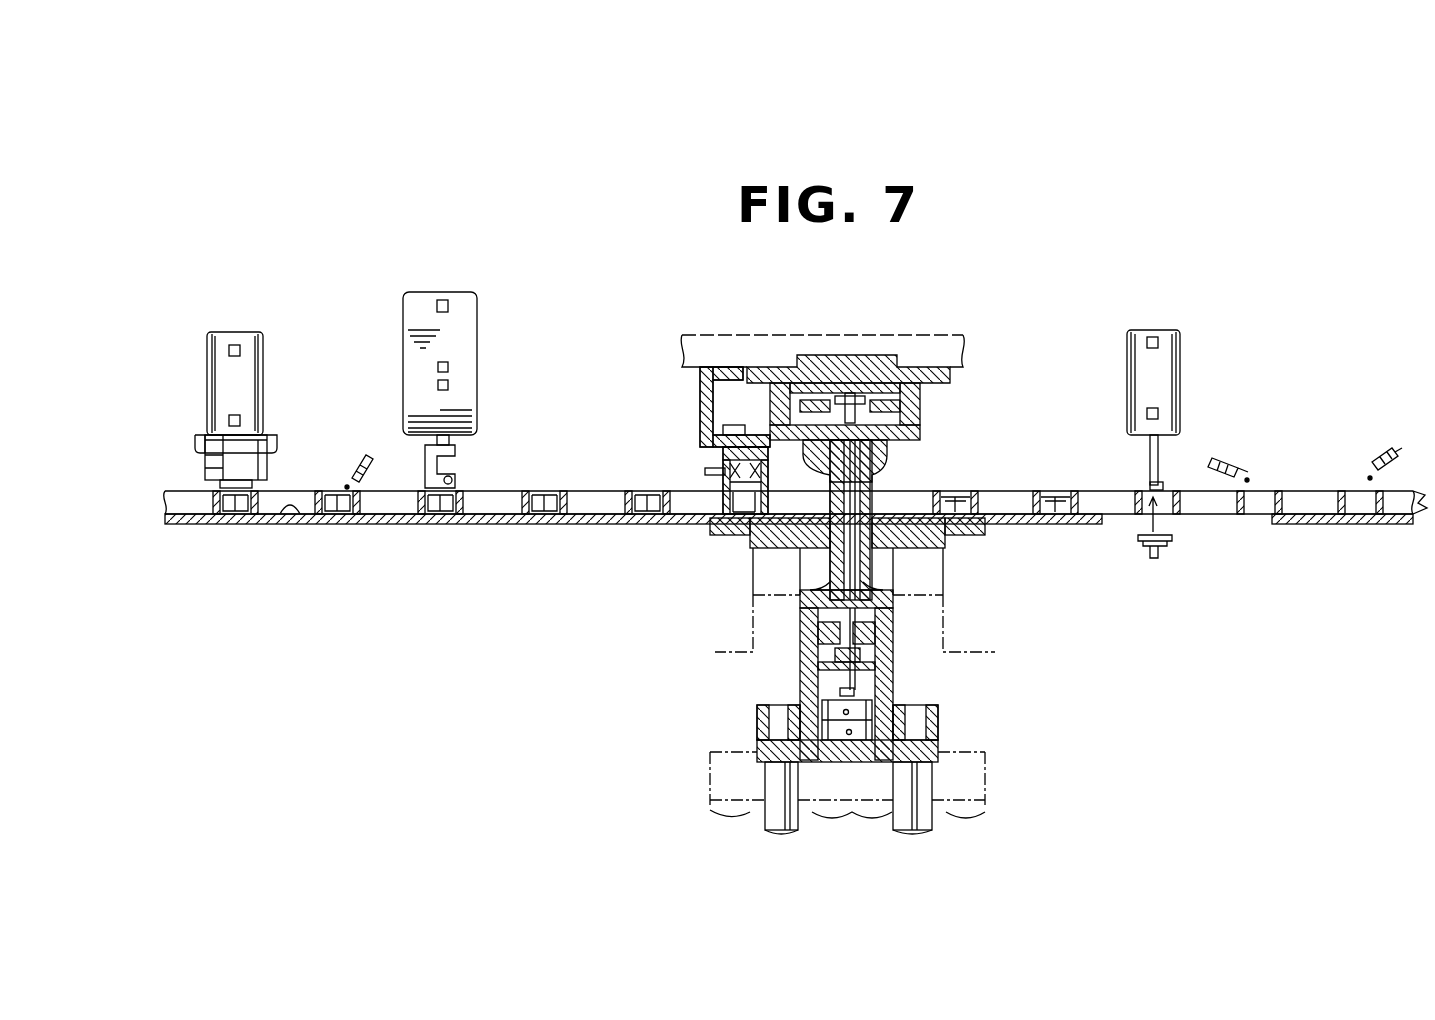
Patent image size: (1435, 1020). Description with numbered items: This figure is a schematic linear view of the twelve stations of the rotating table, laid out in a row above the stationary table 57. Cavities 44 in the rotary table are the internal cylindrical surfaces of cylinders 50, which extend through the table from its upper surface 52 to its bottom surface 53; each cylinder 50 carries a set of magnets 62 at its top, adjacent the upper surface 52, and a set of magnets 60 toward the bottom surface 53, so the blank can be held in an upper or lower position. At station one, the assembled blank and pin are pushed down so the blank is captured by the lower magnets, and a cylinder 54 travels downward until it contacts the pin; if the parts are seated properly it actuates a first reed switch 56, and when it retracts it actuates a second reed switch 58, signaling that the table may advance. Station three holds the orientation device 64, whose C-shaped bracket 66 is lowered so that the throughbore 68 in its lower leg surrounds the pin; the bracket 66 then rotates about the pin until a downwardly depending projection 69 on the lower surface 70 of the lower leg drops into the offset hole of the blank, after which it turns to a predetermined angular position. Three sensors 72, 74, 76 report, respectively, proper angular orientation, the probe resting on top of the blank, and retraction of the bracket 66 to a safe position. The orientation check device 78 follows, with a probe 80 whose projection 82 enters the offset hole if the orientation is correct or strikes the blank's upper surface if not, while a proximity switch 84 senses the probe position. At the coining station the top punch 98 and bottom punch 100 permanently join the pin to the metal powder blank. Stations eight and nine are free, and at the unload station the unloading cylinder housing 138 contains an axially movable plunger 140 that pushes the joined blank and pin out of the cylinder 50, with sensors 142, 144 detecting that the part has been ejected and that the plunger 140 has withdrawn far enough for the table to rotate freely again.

The cavity 44 is at (233, 500).
The cylinder 50 is at (215, 505).
The upper surface 52 is at (182, 490).
The bottom surface 53 is at (288, 508).
The cylinder 54 is at (242, 456).
The first reed switch 56 is at (228, 420).
The stationary table 57 is at (170, 520).
The second reed switch 58 is at (228, 350).
The magnets 60 is at (370, 498).
The magnets 62 is at (366, 492).
The orientation device 64 is at (415, 330).
The C-shaped bracket 66 is at (435, 462).
The throughbore 68 is at (455, 479).
The projection 69 is at (428, 497).
The lower surface 70 is at (453, 498).
The sensor 72 is at (438, 385).
The sensor 74 is at (450, 366).
The sensor 76 is at (441, 300).
The orientation check device 78 is at (705, 471).
The probe 80 is at (738, 495).
The projection 82 is at (748, 530).
The proximity switch 84 is at (718, 447).
The top punch 98 is at (862, 476).
The bottom punch 100 is at (838, 565).
The unloading cylinder housing 138 is at (1170, 390).
The plunger 140 is at (1170, 480).
The sensor 142 is at (1146, 413).
The sensor 144 is at (1153, 337).